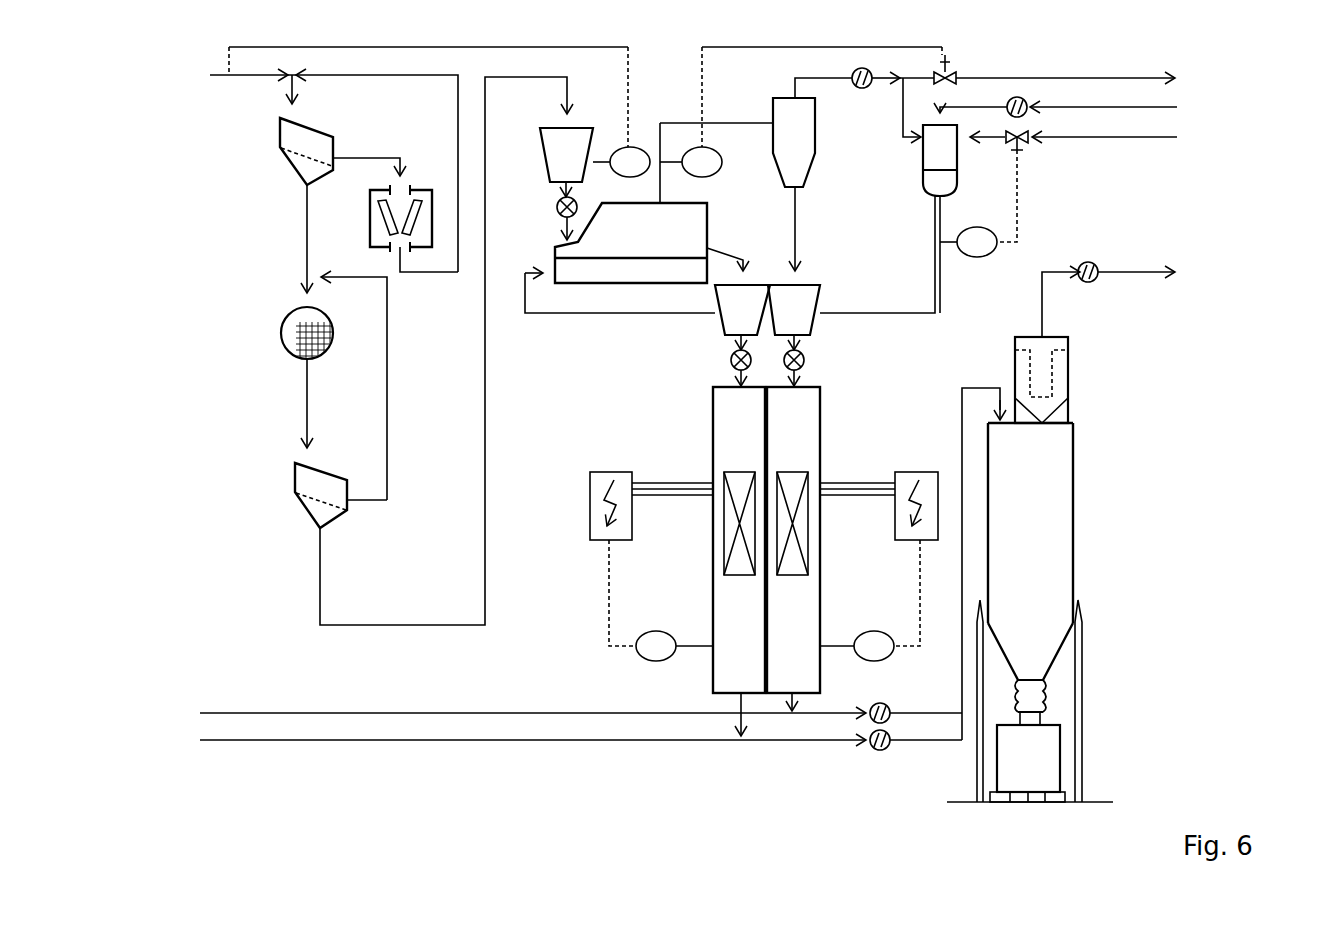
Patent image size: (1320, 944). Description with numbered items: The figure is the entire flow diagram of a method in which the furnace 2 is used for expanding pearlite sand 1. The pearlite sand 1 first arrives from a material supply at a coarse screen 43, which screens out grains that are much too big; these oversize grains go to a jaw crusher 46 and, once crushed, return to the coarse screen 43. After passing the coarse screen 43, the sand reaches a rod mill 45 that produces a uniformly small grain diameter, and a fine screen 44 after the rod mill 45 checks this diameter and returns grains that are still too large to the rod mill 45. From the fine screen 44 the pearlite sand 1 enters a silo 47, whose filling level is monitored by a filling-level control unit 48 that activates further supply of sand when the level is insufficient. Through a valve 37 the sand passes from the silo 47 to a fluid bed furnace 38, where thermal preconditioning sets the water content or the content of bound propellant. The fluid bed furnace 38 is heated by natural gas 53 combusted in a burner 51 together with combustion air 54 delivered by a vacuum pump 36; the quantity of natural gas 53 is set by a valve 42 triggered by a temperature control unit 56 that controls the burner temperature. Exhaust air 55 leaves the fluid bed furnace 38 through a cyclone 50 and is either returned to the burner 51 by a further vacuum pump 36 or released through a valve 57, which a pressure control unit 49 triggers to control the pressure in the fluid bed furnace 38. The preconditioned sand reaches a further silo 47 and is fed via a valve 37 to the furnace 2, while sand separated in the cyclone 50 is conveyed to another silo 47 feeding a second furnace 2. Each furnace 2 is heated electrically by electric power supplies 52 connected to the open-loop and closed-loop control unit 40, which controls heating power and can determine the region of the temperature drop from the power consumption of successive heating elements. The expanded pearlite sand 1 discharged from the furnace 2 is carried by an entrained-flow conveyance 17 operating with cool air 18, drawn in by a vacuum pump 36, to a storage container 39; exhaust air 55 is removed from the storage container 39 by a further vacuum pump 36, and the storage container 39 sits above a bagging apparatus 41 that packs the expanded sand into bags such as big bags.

The pearlite sand 1 is at (412, 159).
The furnace 2 is at (747, 628).
The entrained-flow conveyance 17 is at (658, 712).
The cool air 18 is at (184, 726).
The vacuum pump 36 is at (866, 88).
The valve 37 is at (557, 207).
The fluid bed furnace 38 is at (662, 246).
The storage container 39 is at (1048, 541).
The open-loop and closed-loop control unit 40 is at (669, 657).
The bagging apparatus 41 is at (1040, 742).
The valve 42 is at (1025, 143).
The coarse screen 43 is at (279, 145).
The fine screen 44 is at (293, 487).
The rod mill 45 is at (281, 334).
The jaw crusher 46 is at (402, 187).
The silo 47 is at (582, 168).
The filling-level control unit 48 is at (643, 173).
The pressure control unit 49 is at (715, 173).
The cyclone 50 is at (811, 146).
The burner 51 is at (953, 166).
The electric power supply 52 is at (612, 470).
The natural gas 53 is at (1092, 137).
The combustion air 54 is at (1077, 107).
The exhaust air 55 is at (1085, 200).
The temperature control unit 56 is at (990, 253).
The valve 57 is at (956, 71).